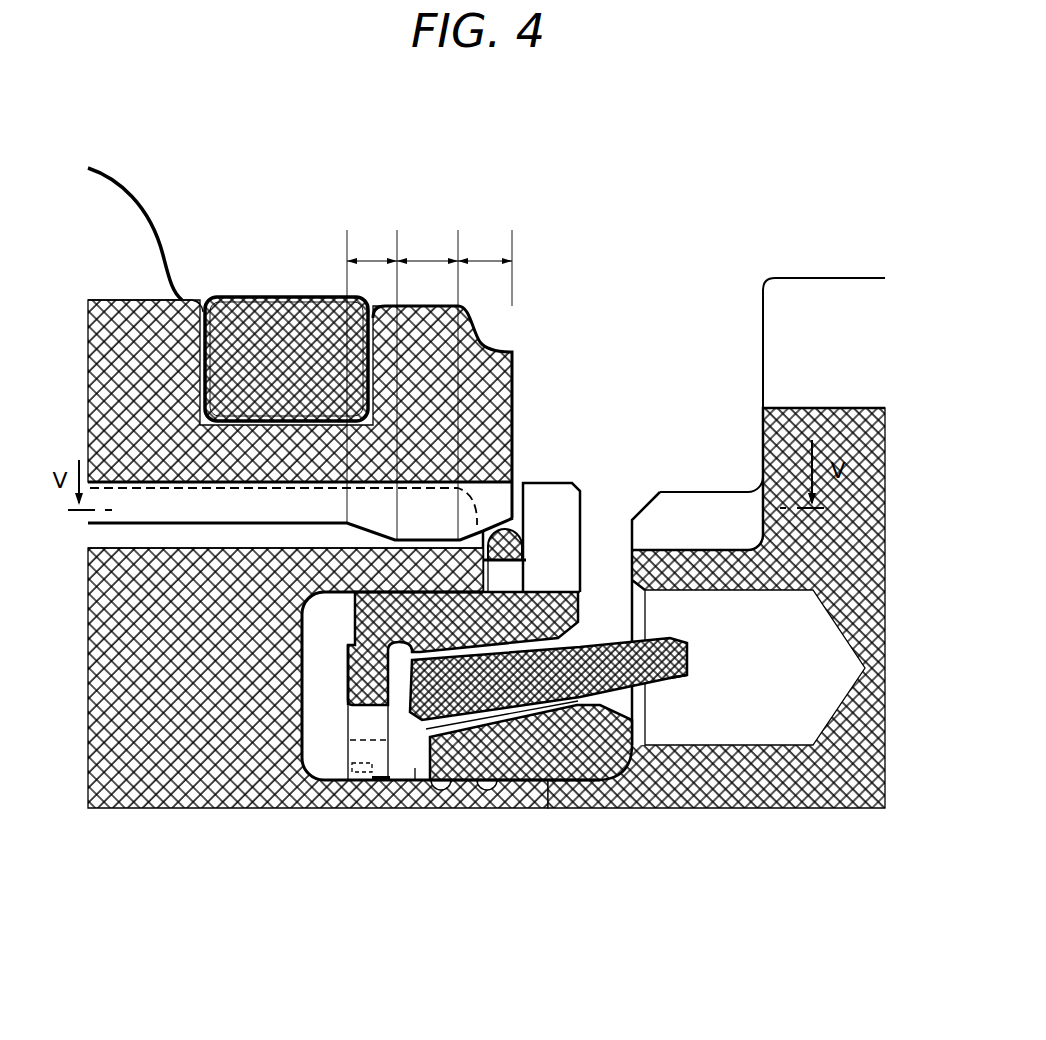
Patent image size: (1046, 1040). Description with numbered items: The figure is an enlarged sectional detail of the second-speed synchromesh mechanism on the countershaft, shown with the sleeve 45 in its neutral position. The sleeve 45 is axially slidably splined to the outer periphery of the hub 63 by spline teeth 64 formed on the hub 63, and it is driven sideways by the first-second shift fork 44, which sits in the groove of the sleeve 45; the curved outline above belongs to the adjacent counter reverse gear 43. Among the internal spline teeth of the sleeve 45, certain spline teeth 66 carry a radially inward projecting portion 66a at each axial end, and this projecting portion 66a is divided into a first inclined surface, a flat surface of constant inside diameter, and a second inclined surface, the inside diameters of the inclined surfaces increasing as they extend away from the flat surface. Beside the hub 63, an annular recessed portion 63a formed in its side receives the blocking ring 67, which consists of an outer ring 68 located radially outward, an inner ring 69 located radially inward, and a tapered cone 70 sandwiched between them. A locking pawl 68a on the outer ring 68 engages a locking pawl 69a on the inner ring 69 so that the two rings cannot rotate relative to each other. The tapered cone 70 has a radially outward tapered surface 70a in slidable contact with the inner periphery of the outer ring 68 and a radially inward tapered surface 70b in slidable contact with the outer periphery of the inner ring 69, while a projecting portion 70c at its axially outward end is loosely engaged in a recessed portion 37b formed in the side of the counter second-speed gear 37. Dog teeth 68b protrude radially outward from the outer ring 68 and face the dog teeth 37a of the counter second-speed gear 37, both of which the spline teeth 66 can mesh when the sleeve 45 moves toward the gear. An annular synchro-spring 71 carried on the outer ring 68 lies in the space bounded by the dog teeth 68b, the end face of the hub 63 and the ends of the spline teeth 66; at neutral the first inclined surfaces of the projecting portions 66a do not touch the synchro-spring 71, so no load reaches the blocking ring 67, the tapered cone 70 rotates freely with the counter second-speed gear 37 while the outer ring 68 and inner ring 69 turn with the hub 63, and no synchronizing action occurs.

The counter second-speed gear 37 is at (758, 398).
The dog teeth 37a is at (715, 503).
The recessed portion 37b is at (788, 592).
The counter reverse gear 43 is at (135, 260).
The first-second shift fork 44 is at (318, 308).
The sleeve 45 is at (528, 406).
The hub 63 is at (208, 812).
The annular recessed portion 63a is at (347, 637).
The spline teeth 64 is at (242, 540).
The spline teeth 66 is at (175, 532).
The projecting portion 66a is at (347, 236).
The blocking ring 67 is at (342, 697).
The outer ring 68 is at (586, 618).
The locking pawl 68a is at (365, 725).
The dog teeth 68b is at (570, 523).
The inner ring 69 is at (635, 728).
The locking pawl 69a is at (415, 770).
The tapered cone 70 is at (700, 652).
The radially outward tapered surface 70a is at (632, 527).
The radially inward tapered surface 70b is at (556, 690).
The projecting portion 70c is at (672, 677).
The synchro-spring 71 is at (523, 533).